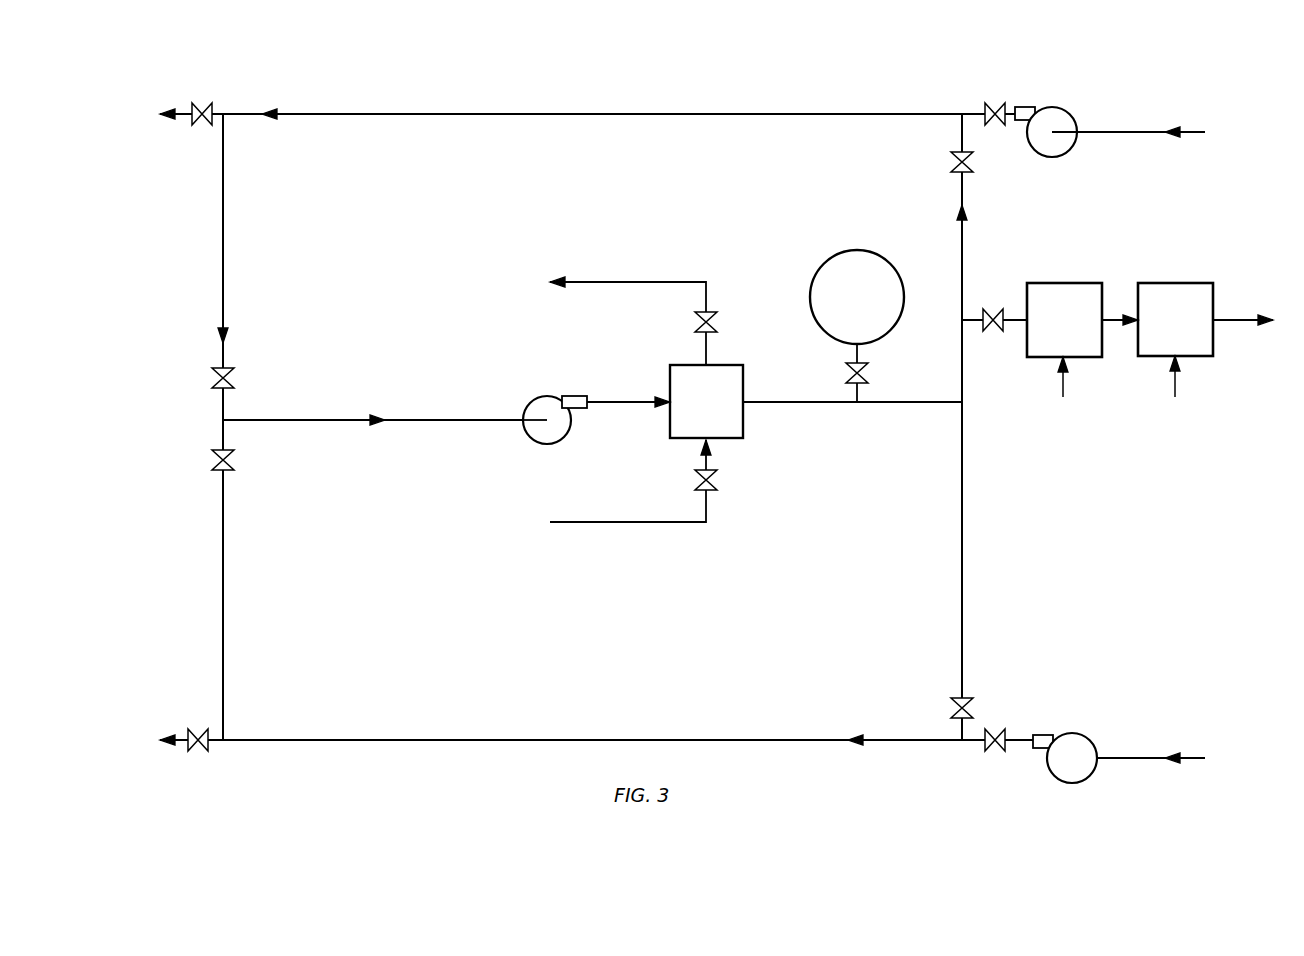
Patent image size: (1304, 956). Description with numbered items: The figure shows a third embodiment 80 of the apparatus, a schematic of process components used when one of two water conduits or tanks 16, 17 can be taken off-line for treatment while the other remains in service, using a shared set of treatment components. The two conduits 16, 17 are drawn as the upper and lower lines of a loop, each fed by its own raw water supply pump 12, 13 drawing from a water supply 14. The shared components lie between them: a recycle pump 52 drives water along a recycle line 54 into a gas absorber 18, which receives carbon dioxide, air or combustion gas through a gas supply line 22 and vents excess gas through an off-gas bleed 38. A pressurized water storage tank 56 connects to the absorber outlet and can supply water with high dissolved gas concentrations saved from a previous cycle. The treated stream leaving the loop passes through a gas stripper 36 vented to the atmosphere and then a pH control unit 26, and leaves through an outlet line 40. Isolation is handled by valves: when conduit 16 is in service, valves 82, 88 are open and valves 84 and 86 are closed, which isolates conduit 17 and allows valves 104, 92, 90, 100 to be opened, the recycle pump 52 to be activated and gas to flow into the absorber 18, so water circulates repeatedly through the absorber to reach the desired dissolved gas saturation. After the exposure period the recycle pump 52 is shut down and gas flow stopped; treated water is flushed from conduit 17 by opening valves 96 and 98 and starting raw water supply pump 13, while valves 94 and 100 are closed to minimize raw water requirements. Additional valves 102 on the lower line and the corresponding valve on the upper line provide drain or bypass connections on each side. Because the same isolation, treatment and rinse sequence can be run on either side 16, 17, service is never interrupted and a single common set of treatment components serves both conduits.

The third embodiment 80 is at (853, 82).
The raw water supply pump 12 is at (1060, 108).
The raw water supply pump 13 is at (1072, 734).
The water supply 14 is at (1178, 130).
The water conduit or tank 16 is at (628, 113).
The water conduit or tank 17 is at (607, 740).
The gas absorber 18 is at (816, 401).
The gas supply line 22 is at (620, 522).
The pH control unit 26 is at (1176, 351).
The gas stripper 36 is at (1064, 351).
The off-gas bleed 38 is at (655, 282).
The discharge line 40 is at (1240, 316).
The recycle pump 52 is at (535, 399).
The recycle line 54 is at (333, 418).
The pressurized water storage tank 56 is at (857, 326).
The valve 82 is at (990, 104).
The valve 84 is at (952, 165).
The valve 86 is at (212, 378).
The valve 88 is at (200, 104).
The valve 90 is at (716, 322).
The valve 92 is at (716, 480).
The valve 94 is at (846, 375).
The valve 96 is at (993, 308).
The valve 98 is at (990, 752).
The valve 100 is at (972, 708).
The valve 102 is at (198, 730).
The valve 104 is at (232, 462).